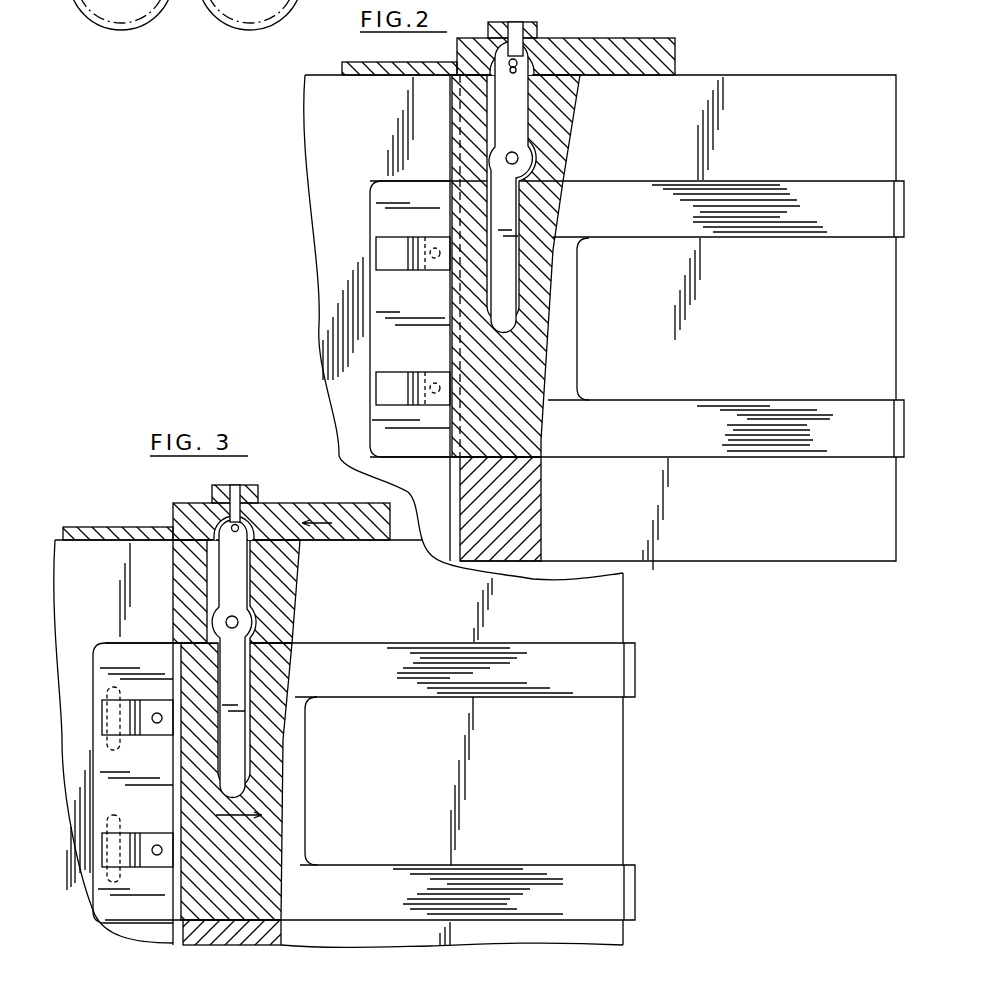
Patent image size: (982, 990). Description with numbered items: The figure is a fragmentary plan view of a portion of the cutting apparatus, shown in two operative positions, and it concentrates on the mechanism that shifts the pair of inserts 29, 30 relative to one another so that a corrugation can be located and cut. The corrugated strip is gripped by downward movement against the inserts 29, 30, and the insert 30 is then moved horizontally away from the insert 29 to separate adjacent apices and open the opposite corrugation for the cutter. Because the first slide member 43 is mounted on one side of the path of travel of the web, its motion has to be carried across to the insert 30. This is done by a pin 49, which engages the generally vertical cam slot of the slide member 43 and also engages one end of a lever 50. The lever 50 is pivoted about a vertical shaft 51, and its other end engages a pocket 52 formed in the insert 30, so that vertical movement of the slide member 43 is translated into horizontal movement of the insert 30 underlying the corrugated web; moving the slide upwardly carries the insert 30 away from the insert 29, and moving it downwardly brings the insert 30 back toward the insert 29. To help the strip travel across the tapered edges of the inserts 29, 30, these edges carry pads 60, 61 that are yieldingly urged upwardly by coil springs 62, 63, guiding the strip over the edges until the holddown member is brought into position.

In FIG. 2, the insert 29 is at (432, 452).
In FIG. 3, the insert 29 is at (118, 655).
In FIG. 2, the insert 30 is at (577, 450).
In FIG. 3, the insert 30 is at (268, 895).
In FIG. 2, the first slide member 43 is at (538, 26).
In FIG. 3, the first slide member 43 is at (262, 497).
In FIG. 2, the pin 49 is at (515, 22).
In FIG. 3, the pin 49 is at (235, 486).
In FIG. 2, the lever 50 is at (513, 128).
In FIG. 3, the lever 50 is at (232, 659).
In FIG. 2, the vertical shaft 51 is at (520, 158).
In FIG. 3, the vertical shaft 51 is at (232, 622).
In FIG. 2, the pocket 52 is at (500, 318).
In FIG. 3, the pocket 52 is at (231, 652).
In FIG. 2, the pad 60 is at (397, 263).
In FIG. 3, the pad 60 is at (137, 718).
In FIG. 2, the pad 61 is at (400, 372).
In FIG. 3, the pad 61 is at (137, 848).
In FIG. 2, the coil spring 62 is at (438, 232).
In FIG. 3, the coil spring 62 is at (157, 718).
In FIG. 2, the coil spring 63 is at (432, 408).
In FIG. 3, the coil spring 63 is at (157, 850).